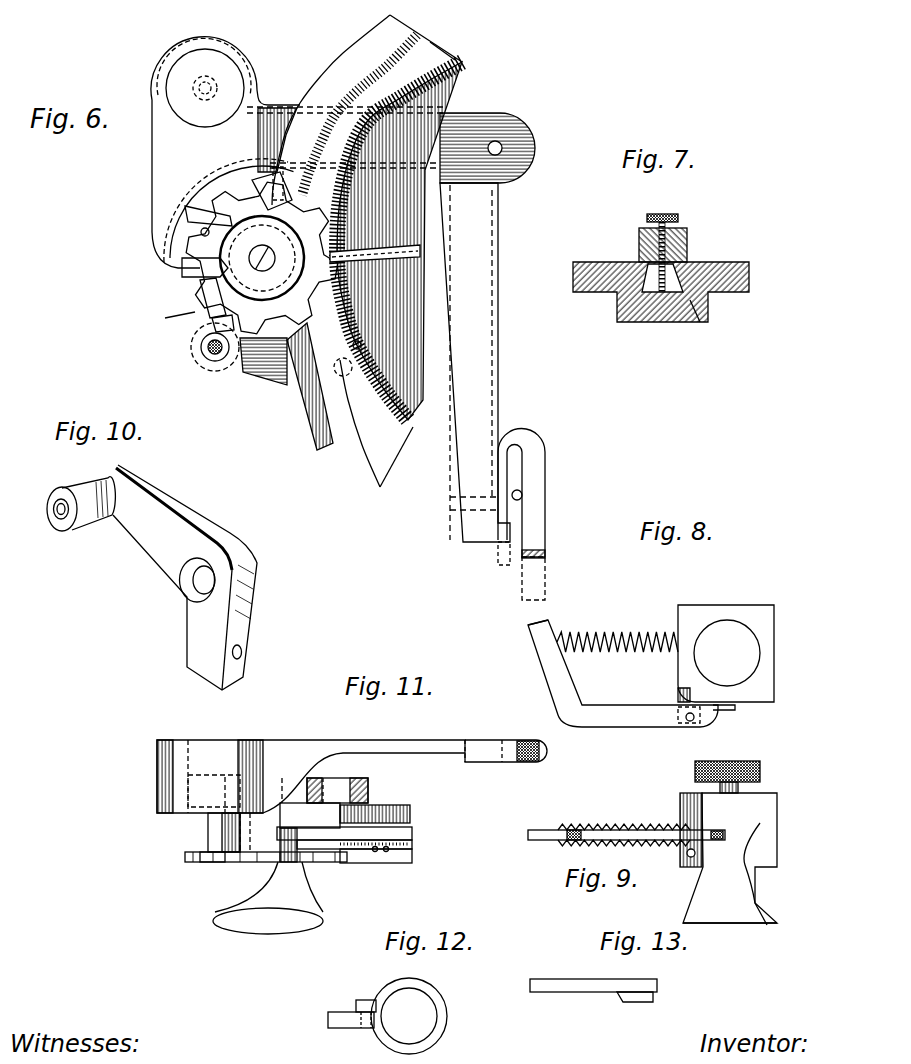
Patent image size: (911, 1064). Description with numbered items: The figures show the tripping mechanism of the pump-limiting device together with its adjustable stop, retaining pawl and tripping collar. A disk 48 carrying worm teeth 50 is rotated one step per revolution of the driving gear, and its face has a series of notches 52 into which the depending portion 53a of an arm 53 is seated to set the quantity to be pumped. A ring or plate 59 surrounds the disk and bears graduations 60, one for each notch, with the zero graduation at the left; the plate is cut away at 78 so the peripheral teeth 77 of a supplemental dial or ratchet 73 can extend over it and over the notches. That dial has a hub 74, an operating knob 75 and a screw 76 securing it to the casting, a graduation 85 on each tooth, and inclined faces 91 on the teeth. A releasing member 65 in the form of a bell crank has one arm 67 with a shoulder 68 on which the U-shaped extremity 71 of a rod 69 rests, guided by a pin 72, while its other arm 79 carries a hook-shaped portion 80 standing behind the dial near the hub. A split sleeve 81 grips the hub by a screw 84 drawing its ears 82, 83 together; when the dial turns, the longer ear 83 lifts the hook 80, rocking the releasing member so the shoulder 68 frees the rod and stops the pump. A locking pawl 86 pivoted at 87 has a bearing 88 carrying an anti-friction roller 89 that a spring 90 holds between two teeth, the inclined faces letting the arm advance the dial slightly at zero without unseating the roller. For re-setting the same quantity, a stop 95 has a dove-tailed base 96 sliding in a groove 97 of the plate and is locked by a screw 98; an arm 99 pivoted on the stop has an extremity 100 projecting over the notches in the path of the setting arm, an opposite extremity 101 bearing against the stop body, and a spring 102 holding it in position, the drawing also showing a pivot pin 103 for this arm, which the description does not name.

In FIG. 6, the disk 48 is at (445, 100).
In FIG. 11, the disk 48 is at (413, 845).
In FIG. 11, the worm teeth 50 is at (390, 806).
In FIG. 6, the notches 52 is at (350, 341).
In FIG. 11, the notches 52 is at (386, 850).
In FIG. 6, the arm 53 is at (407, 262).
In FIG. 11, the arm 53 is at (397, 857).
In FIG. 13, the arm 53 is at (568, 992).
In FIG. 13, the depending portion 53a is at (660, 997).
In FIG. 6, the ring or plate 59 is at (336, 76).
In FIG. 7, the ring or plate 59 is at (730, 268).
In FIG. 11, the ring or plate 59 is at (405, 833).
In FIG. 6, the graduations 60 is at (438, 58).
In FIG. 6, the releasing member 65 is at (503, 128).
In FIG. 11, the releasing member 65 is at (487, 747).
In FIG. 6, the arm of releasing member 67 is at (487, 368).
In FIG. 6, the shoulder or offset portion 68 is at (505, 535).
In FIG. 6, the rod or bar 69 is at (546, 557).
In FIG. 6, the U-shaped extremity 71 is at (505, 490).
In FIG. 6, the guide pin 72 is at (523, 495).
In FIG. 6, the supplemental dial or ratchet 73 is at (205, 298).
In FIG. 11, the supplemental dial or ratchet 73 is at (277, 857).
In FIG. 11, the hub 74 is at (267, 828).
In FIG. 6, the operating knob or handle 75 is at (197, 283).
In FIG. 11, the operating knob or handle 75 is at (283, 927).
In FIG. 6, the screw or bolt 76 is at (262, 256).
In FIG. 6, the peripheral teeth 77 is at (217, 317).
In FIG. 6, the cut away portion 78 is at (278, 170).
In FIG. 6, the other arm of releasing member 79 is at (268, 130).
In FIG. 11, the other arm of releasing member 79 is at (337, 747).
In FIG. 6, the hook-shaped portion 80 is at (175, 243).
In FIG. 11, the split sleeve or holder 81 is at (283, 775).
In FIG. 12, the split sleeve or holder 81 is at (423, 998).
In FIG. 12, the ear 82 is at (363, 1000).
In FIG. 11, the ear 83 is at (198, 775).
In FIG. 12, the ear 83 is at (346, 1028).
In FIG. 6, the screw or bolt 84 is at (285, 188).
In FIG. 11, the screw or bolt 84 is at (228, 775).
In FIG. 6, the graduation 85 is at (228, 210).
In FIG. 6, the locking pawl 86 is at (278, 374).
In FIG. 10, the locking pawl 86 is at (155, 543).
In FIG. 11, the locking pawl 86 is at (312, 783).
In FIG. 6, the pivot 87 is at (318, 398).
In FIG. 10, the pivot 87 is at (215, 580).
In FIG. 10, the bearing 88 is at (77, 484).
In FIG. 11, the bearing 88 is at (208, 835).
In FIG. 6, the anti-friction roller 89 is at (205, 350).
In FIG. 11, the anti-friction roller 89 is at (210, 863).
In FIG. 6, the yielding member 90 is at (363, 390).
In FIG. 6, the inclined faces 91 is at (198, 313).
In FIG. 7, the stop 95 is at (690, 245).
In FIG. 8, the stop 95 is at (745, 618).
In FIG. 9, the stop 95 is at (753, 921).
In FIG. 7, the dove-tailed base 96 is at (690, 300).
In FIG. 9, the dove-tailed base 96 is at (686, 914).
In FIG. 6, the groove 97 is at (380, 70).
In FIG. 7, the groove 97 is at (652, 300).
In FIG. 7, the screw 98 is at (662, 214).
In FIG. 8, the screw 98 is at (718, 632).
In FIG. 9, the screw 98 is at (745, 765).
In FIG. 8, the arm 99 is at (628, 718).
In FIG. 9, the arm 99 is at (593, 835).
In FIG. 8, the extremity 100 is at (527, 627).
In FIG. 8, the other extremity 101 is at (730, 706).
In FIG. 9, the other extremity 101 is at (719, 831).
In FIG. 8, the yielding member 102 is at (620, 634).
In FIG. 9, the yielding member 102 is at (630, 828).
In FIG. 8, the pivot pin 103 is at (691, 722).
In FIG. 9, the pivot pin 103 is at (688, 853).